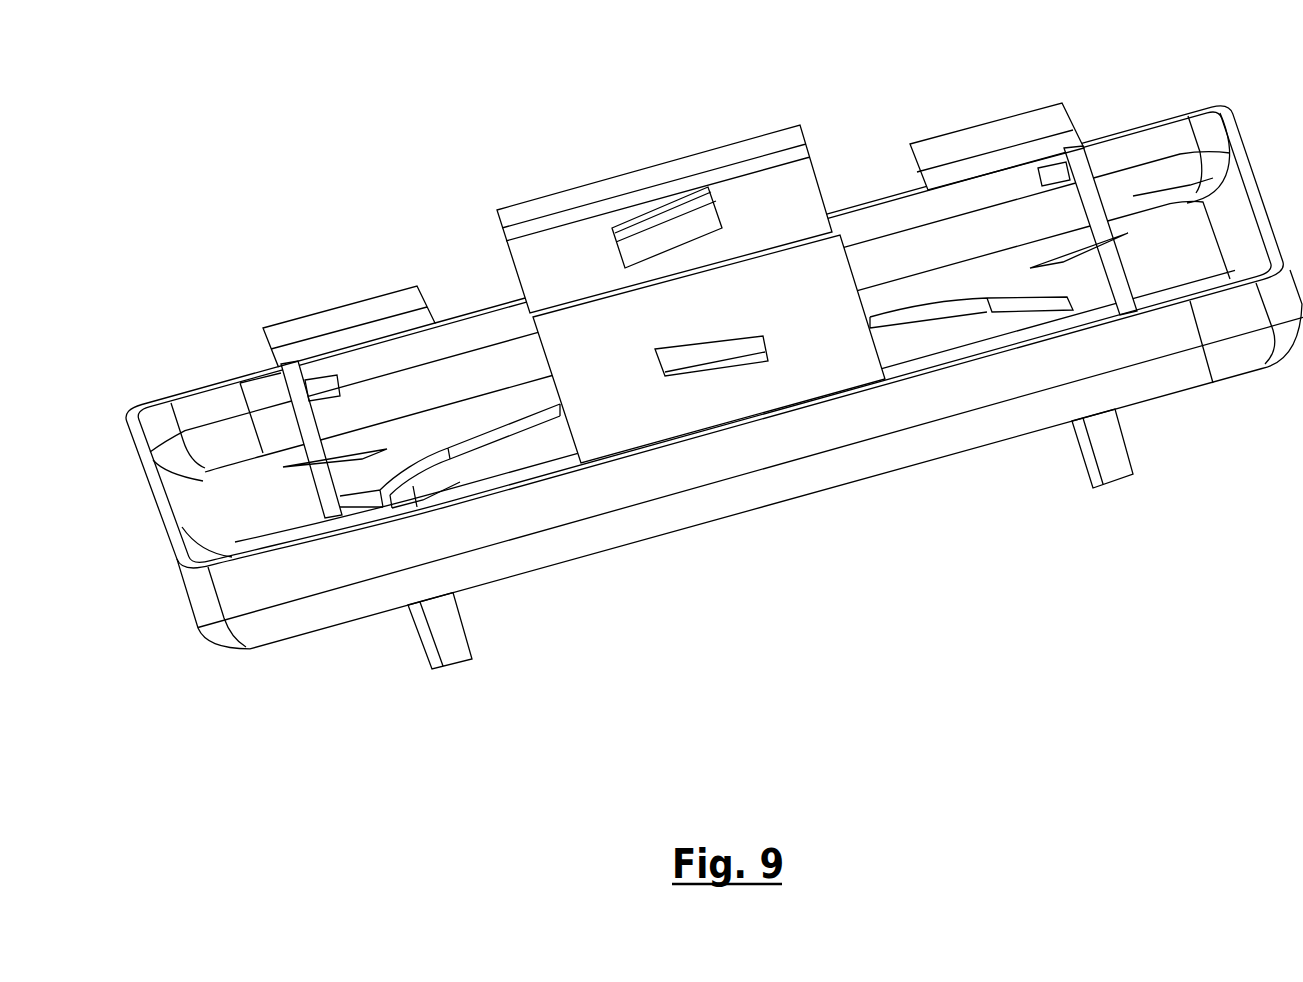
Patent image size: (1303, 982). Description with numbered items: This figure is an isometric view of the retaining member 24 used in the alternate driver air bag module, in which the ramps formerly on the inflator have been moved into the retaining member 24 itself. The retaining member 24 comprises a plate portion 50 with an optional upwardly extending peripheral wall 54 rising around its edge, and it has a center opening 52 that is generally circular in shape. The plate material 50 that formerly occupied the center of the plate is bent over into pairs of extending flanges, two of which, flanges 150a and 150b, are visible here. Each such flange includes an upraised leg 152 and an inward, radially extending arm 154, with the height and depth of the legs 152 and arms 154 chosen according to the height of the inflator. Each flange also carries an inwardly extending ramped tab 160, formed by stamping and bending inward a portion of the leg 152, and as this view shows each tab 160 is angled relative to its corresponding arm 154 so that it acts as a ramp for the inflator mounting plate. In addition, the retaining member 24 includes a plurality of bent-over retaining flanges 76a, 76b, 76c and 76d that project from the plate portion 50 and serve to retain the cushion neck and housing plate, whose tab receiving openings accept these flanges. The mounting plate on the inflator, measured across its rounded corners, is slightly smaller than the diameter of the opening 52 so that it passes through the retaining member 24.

The retaining member 24 is at (271, 300).
The plate portion 50 is at (427, 437).
The center opening 52 is at (937, 318).
The peripheral wall 54 is at (572, 552).
The bent-over retaining flange 76a is at (428, 492).
The bent-over retaining flange 76b is at (1053, 322).
The bent-over retaining flange 76c is at (432, 625).
The bent-over retaining flange 76d is at (1088, 457).
The extending flange 150a is at (800, 385).
The extending flange 150b is at (813, 185).
The upraised leg 152 is at (315, 480).
The inward, radially extending arm 154 is at (362, 308).
The inwardly extending ramped tab 160 is at (687, 210).